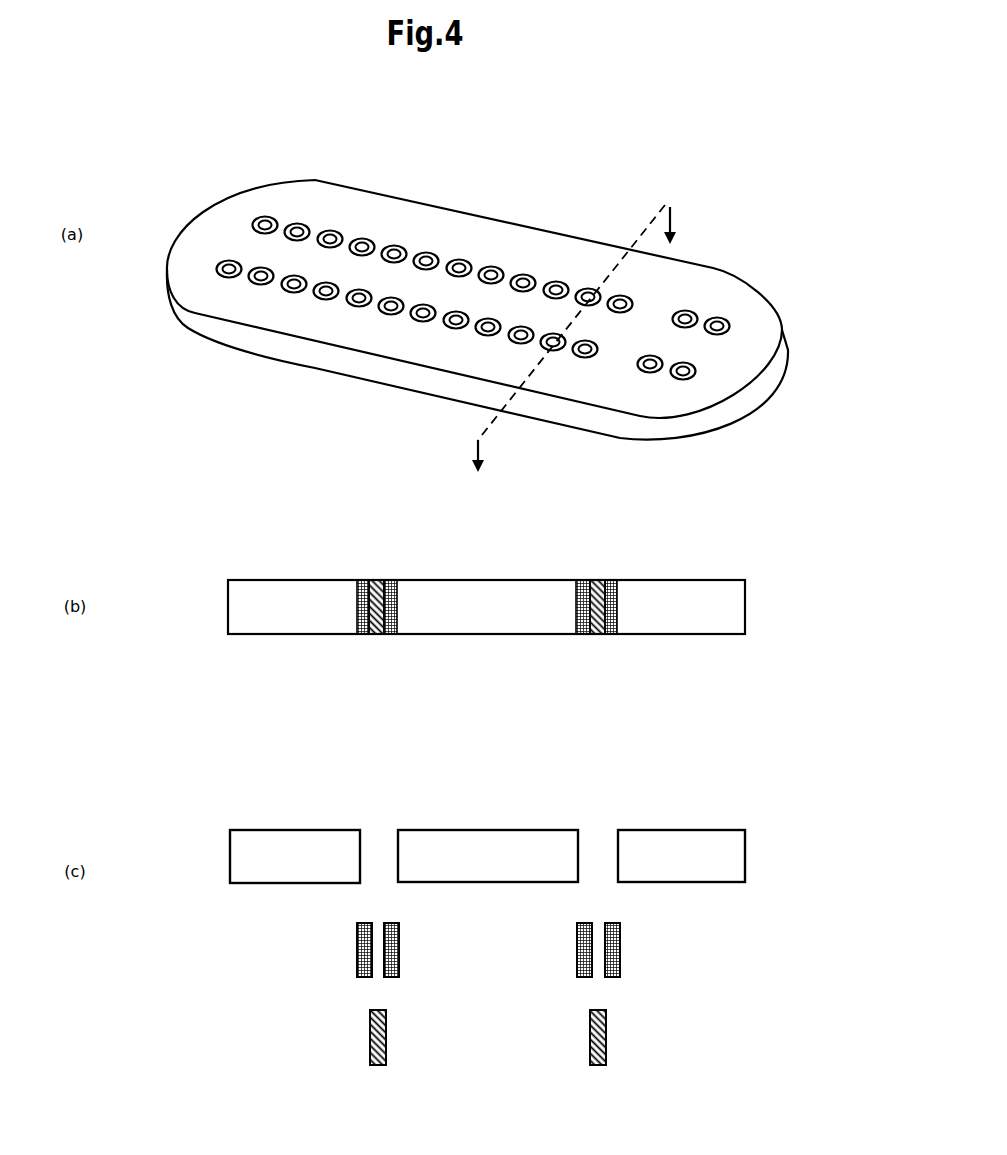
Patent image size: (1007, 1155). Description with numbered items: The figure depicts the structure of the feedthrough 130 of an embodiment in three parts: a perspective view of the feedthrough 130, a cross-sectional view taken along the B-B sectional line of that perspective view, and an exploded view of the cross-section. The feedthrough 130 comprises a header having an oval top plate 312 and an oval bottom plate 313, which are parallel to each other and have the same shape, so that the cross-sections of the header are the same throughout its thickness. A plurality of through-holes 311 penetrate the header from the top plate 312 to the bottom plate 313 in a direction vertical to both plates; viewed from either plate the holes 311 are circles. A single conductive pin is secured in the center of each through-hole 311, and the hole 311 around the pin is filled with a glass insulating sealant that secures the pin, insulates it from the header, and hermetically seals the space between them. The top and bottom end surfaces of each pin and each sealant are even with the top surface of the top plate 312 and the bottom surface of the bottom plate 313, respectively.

The feedthrough 130 is at (503, 119).
The through-hole 311 is at (361, 838).
The top plate 312 is at (515, 828).
The bottom plate 313 is at (682, 882).